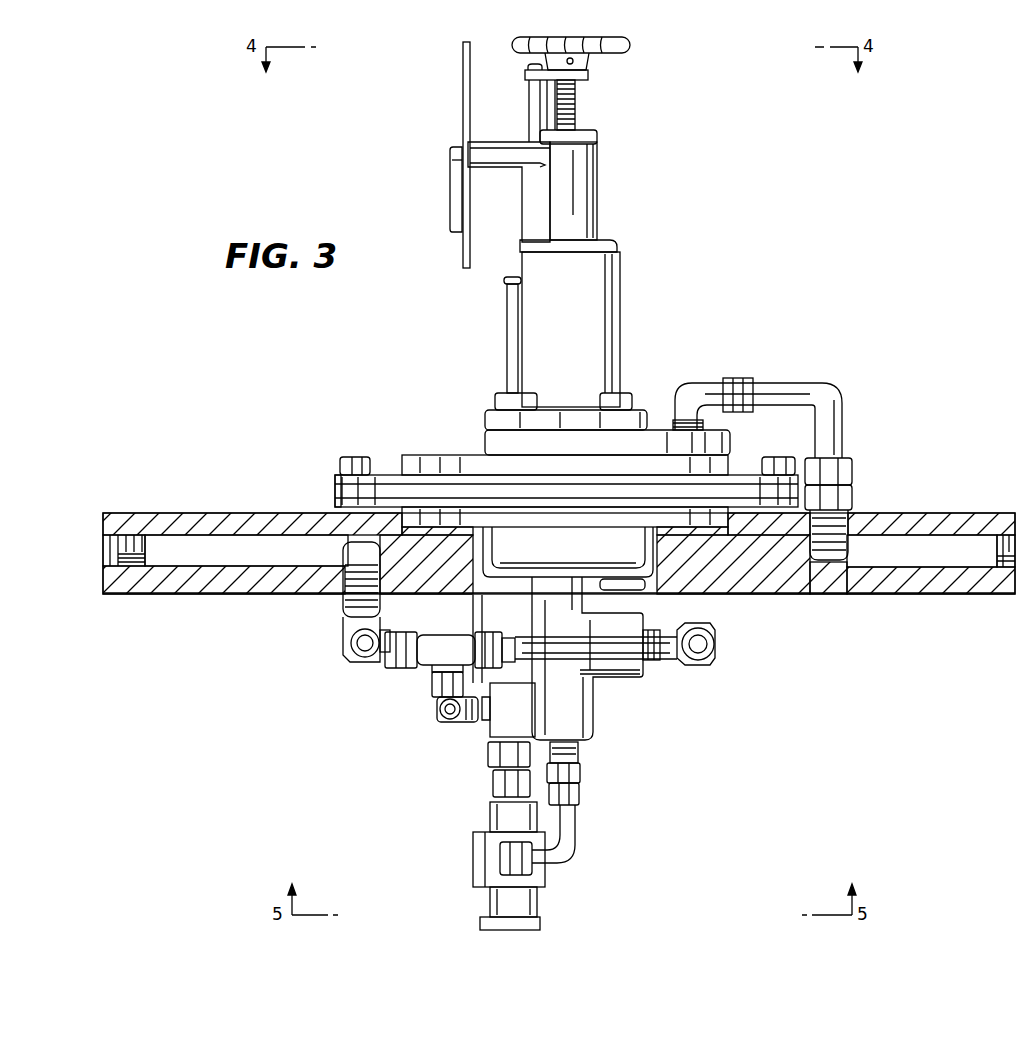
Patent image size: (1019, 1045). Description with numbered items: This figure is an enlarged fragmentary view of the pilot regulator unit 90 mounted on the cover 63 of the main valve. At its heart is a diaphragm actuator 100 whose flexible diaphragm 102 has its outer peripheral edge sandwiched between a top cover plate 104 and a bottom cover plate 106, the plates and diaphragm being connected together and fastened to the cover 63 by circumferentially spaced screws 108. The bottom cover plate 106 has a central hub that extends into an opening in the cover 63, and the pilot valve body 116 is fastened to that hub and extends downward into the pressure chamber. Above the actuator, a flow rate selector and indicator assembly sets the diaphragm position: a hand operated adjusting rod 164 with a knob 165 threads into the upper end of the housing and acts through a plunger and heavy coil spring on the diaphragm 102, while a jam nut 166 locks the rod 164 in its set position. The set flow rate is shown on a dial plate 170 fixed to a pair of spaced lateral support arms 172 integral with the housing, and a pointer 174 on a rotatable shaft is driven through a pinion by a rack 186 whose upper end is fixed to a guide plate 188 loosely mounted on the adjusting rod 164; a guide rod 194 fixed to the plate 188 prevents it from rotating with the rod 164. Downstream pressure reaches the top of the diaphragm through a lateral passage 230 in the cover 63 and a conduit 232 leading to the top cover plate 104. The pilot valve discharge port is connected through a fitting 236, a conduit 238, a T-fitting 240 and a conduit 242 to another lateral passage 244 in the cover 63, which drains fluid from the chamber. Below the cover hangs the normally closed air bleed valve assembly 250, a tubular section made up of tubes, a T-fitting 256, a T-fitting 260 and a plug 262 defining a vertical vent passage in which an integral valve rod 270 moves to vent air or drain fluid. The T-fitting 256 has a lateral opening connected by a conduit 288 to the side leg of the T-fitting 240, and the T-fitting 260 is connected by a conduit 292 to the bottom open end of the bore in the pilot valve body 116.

The cover 63 is at (905, 513).
The pilot regulator unit 90 is at (730, 320).
The diaphragm actuator 100 is at (728, 455).
The flexible diaphragm 102 is at (445, 488).
The top cover plate 104 is at (388, 482).
The bottom cover plate 106 is at (335, 500).
The screws 108 is at (348, 458).
The pilot valve body 116 is at (593, 724).
The adjusting rod 164 is at (575, 108).
The knob 165 is at (630, 45).
The jam nut 166 is at (597, 136).
The dial plate 170 is at (463, 96).
The lateral support arms 172 is at (512, 168).
The pointer 174 is at (450, 204).
The rack 186 is at (529, 100).
The guide plate 188 is at (588, 75).
The guide rod 194 is at (547, 116).
The lateral passage 230 is at (955, 545).
The conduit 232 is at (772, 392).
The fitting 236 is at (715, 646).
The conduit 238 is at (632, 652).
The T-fitting 240 is at (447, 642).
The conduit 242 is at (350, 650).
The lateral passage 244 is at (240, 550).
The air bleed valve assembly 250 is at (490, 780).
The T-fitting 256 is at (524, 721).
The T-fitting 260 is at (545, 884).
The plug 262 is at (540, 918).
The valve rod 270 is at (507, 348).
The conduit 288 is at (437, 709).
The conduit 292 is at (572, 836).